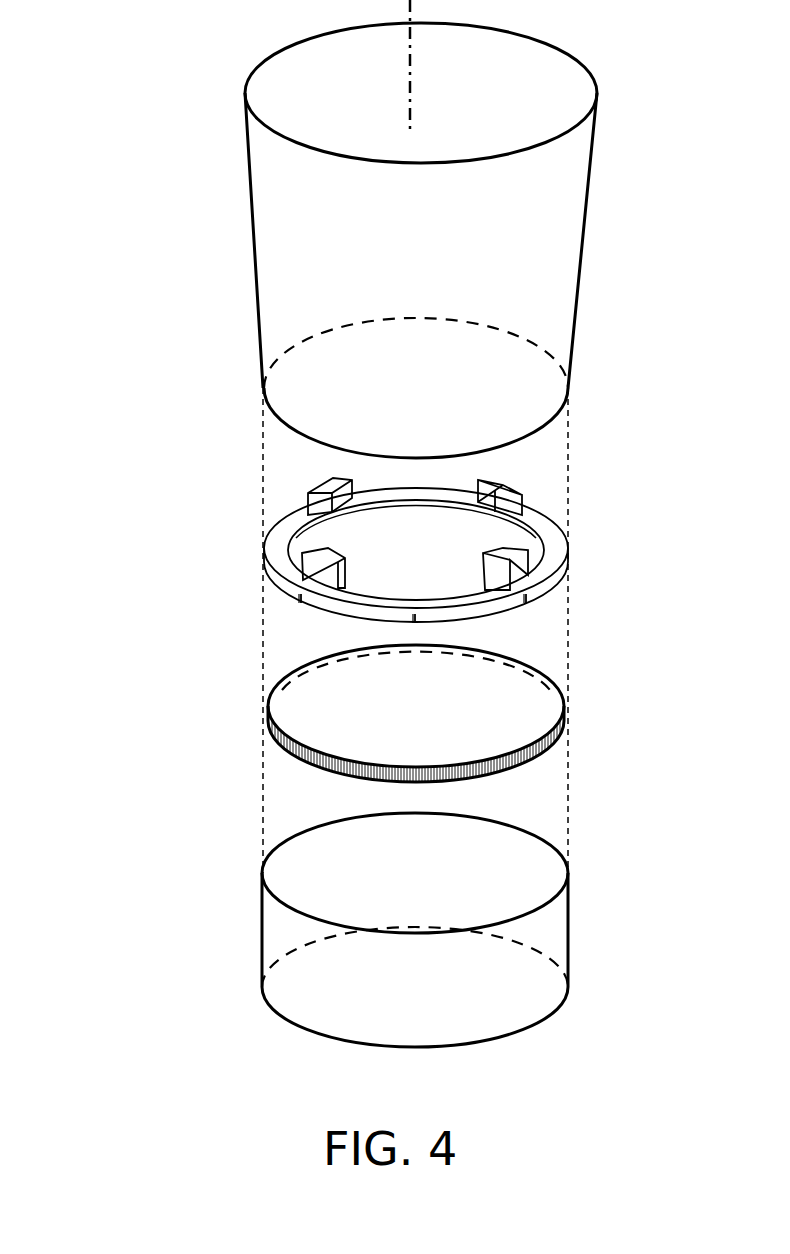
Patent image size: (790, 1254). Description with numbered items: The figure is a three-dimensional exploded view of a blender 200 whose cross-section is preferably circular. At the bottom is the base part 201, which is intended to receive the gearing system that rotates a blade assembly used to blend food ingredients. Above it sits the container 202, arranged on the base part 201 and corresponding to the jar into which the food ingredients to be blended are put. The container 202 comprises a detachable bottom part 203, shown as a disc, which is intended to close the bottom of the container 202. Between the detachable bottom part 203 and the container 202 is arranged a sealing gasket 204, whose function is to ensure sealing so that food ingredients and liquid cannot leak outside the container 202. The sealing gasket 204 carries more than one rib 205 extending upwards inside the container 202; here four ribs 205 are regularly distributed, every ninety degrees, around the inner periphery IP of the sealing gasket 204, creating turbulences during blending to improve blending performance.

The blender 200 is at (128, 95).
The base part 201 is at (569, 895).
The container 202 is at (586, 220).
The detachable bottom part 203 is at (565, 686).
The sealing gasket 204 is at (372, 555).
The rib 205 is at (517, 492).
The inner periphery IP is at (368, 593).